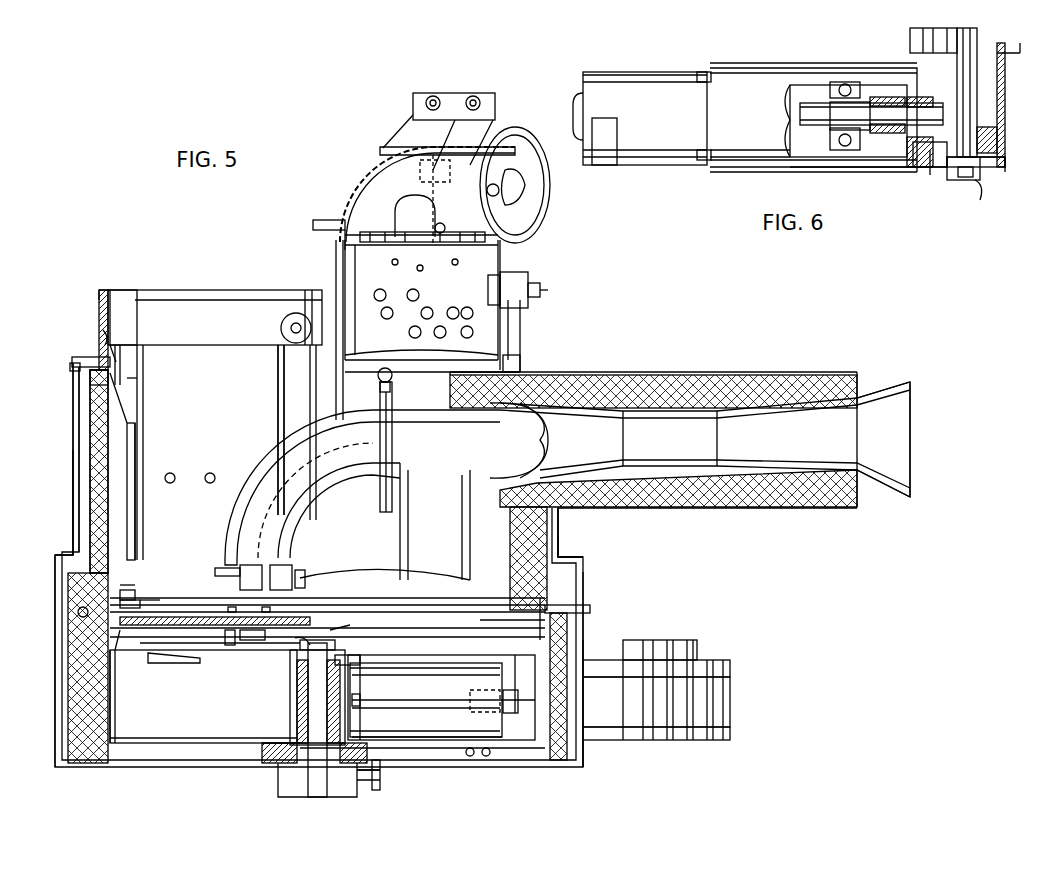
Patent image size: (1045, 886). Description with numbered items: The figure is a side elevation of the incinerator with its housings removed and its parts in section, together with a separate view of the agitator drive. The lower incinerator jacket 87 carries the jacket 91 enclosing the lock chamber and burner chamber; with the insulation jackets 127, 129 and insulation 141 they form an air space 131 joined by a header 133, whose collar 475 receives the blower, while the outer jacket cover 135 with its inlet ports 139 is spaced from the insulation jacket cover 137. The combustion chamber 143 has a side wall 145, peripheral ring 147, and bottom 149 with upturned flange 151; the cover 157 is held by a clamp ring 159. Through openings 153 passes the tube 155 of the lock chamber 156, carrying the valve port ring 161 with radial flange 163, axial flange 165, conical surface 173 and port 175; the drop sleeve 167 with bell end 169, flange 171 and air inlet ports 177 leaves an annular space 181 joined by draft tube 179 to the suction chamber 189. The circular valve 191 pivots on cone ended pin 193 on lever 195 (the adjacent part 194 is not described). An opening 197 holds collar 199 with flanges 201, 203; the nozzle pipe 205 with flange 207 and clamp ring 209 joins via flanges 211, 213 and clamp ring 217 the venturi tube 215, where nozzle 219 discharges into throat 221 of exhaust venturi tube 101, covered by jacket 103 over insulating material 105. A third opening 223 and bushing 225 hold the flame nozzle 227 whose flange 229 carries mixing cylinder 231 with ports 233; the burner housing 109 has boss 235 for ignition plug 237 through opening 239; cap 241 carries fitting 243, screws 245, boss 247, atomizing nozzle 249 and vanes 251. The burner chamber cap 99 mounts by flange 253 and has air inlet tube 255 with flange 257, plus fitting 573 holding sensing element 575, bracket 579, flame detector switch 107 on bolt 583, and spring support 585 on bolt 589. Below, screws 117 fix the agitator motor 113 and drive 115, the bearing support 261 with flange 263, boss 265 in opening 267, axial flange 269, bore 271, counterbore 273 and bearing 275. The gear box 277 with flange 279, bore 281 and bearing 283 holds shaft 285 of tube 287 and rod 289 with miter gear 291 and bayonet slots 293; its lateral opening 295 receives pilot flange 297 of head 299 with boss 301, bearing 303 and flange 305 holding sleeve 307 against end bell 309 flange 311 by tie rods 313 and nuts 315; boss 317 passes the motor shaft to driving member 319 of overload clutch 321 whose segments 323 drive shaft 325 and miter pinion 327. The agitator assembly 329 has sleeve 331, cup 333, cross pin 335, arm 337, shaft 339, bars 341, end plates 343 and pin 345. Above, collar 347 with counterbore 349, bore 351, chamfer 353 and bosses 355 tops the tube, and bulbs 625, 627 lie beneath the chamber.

In FIG. 5, the lower incinerator jacket 87 is at (55, 691).
In FIG. 5, the jacket 91 is at (73, 411).
In FIG. 5, the burner chamber cap 99 is at (356, 172).
In FIG. 5, the exhaust venturi tube 101 is at (882, 378).
In FIG. 5, the jacket 103 is at (750, 372).
In FIG. 5, the insulating material 105 is at (678, 375).
In FIG. 5, the flame detector switch 107 is at (495, 98).
In FIG. 5, the burner housing 109 is at (515, 331).
In FIG. 6, the agitator motor 113 is at (635, 161).
In FIG. 6, the drive 115 is at (932, 171).
In FIG. 5, the screws 117 is at (378, 773).
In FIG. 5, the insulation jacket 127 is at (580, 628).
In FIG. 5, the insulation jacket 129 is at (548, 523).
In FIG. 5, the air space 131 is at (73, 504).
In FIG. 5, the header 133 is at (722, 713).
In FIG. 5, the outer jacket cover 135 is at (68, 367).
In FIG. 5, the insulation jacket cover 137 is at (90, 386).
In FIG. 5, the inlet ports 139 is at (528, 360).
In FIG. 5, the insulation 141 is at (95, 463).
In FIG. 5, the combustion chamber 143 is at (462, 655).
In FIG. 5, the side wall 145 is at (115, 691).
In FIG. 5, the peripheral ring 147 is at (588, 586).
In FIG. 5, the bottom 149 is at (140, 739).
In FIG. 5, the upturned flange 151 is at (112, 721).
In FIG. 5, the openings 153 is at (125, 359).
In FIG. 5, the cylindrical tube 155 is at (90, 446).
In FIG. 5, the lock or intermediate chamber 156 is at (137, 327).
In FIG. 5, the combustion chamber cover 157 is at (475, 626).
In FIG. 5, the clamp ring 159 is at (83, 613).
In FIG. 5, the valve port ring 161 is at (137, 593).
In FIG. 5, the radial flange 163 is at (140, 604).
In FIG. 5, the axial flange 165 is at (115, 631).
In FIG. 5, the drop sleeve 167 is at (137, 448).
In FIG. 5, the bell shaped upper end 169 is at (130, 391).
In FIG. 5, the radially outwardly directed flange 171 is at (122, 381).
In FIG. 5, the conical surface 173 is at (135, 586).
In FIG. 5, the cylindrical port 175 is at (150, 641).
In FIG. 5, the air inlet ports 177 is at (172, 473).
In FIG. 5, the draft tube 179 is at (336, 521).
In FIG. 5, the annular space 181 is at (135, 504).
In FIG. 5, the suction chamber 189 is at (522, 418).
In FIG. 5, the circular valve 191 is at (310, 623).
In FIG. 5, the cone ended pin 193 is at (228, 639).
In FIG. 5, the fitting 194 is at (265, 601).
In FIG. 5, the lever 195 is at (240, 635).
In FIG. 5, the opening 197 is at (235, 601).
In FIG. 5, the collar 199 is at (215, 579).
In FIG. 5, the flange 201 is at (310, 601).
In FIG. 5, the flange 203 is at (305, 581).
In FIG. 5, the nozzle pipe 205 is at (241, 516).
In FIG. 5, the flange 207 is at (305, 573).
In FIG. 5, the clamp ring 209 is at (220, 571).
In FIG. 5, the flange 211 is at (372, 491).
In FIG. 5, the flange 213 is at (393, 471).
In FIG. 5, the venturi tube 215 is at (395, 389).
In FIG. 5, the clamp ring 217 is at (392, 376).
In FIG. 5, the nozzle 219 is at (540, 441).
In FIG. 5, the throat 221 is at (677, 438).
In FIG. 5, the third opening 223 is at (370, 646).
In FIG. 5, the bushing 225 is at (340, 586).
In FIG. 5, the flame nozzle 227 is at (376, 561).
In FIG. 5, the axial flange 229 is at (345, 444).
In FIG. 5, the mixing cylinder 231 is at (345, 300).
In FIG. 5, the air inlet ports 233 is at (412, 331).
In FIG. 5, the boss 235 is at (490, 310).
In FIG. 5, the ignition plug 237 is at (530, 285).
In FIG. 5, the lateral opening 239 is at (489, 288).
In FIG. 5, the cap 241 is at (392, 264).
In FIG. 5, the fuel inlet fitting 243 is at (408, 202).
In FIG. 5, the screws 245 is at (447, 228).
In FIG. 5, the boss 247 is at (458, 263).
In FIG. 5, the atomizing nozzle 249 is at (420, 271).
In FIG. 5, the vanes 251 is at (405, 238).
In FIG. 5, the radial flange 253 is at (326, 220).
In FIG. 5, the air inlet tube 255 is at (548, 184).
In FIG. 5, the flange 257 is at (545, 213).
In FIG. 5, the bearing support 261 is at (300, 706).
In FIG. 5, the radial flange 263 is at (262, 756).
In FIG. 5, the boss 265 is at (295, 740).
In FIG. 5, the opening 267 is at (260, 746).
In FIG. 5, the axial flange 269 is at (380, 774).
In FIG. 5, the bore 271 is at (352, 676).
In FIG. 5, the counterbore 273 is at (380, 736).
In FIG. 5, the bearing 275 is at (355, 709).
In FIG. 6, the gear box 277 is at (998, 171).
In FIG. 5, the flange 279 is at (278, 776).
In FIG. 6, the flange 279 is at (915, 35).
In FIG. 6, the bore 281 is at (965, 181).
In FIG. 6, the self lubricating bearing 283 is at (975, 186).
In FIG. 5, the shaft 285 is at (297, 681).
In FIG. 6, the shaft 285 is at (978, 31).
In FIG. 5, the hollow tube 287 is at (318, 691).
In FIG. 6, the hollow tube 287 is at (975, 86).
In FIG. 6, the solid rod 289 is at (985, 176).
In FIG. 6, the miter gear 291 is at (1002, 121).
In FIG. 5, the bayonet slots 293 is at (305, 644).
In FIG. 6, the lateral opening 295 is at (958, 179).
In FIG. 6, the pilot flange 297 is at (907, 156).
In FIG. 6, the head 299 is at (885, 171).
In FIG. 6, the axial boss 301 is at (905, 136).
In FIG. 6, the bearing 303 is at (871, 114).
In FIG. 6, the radial flange 305 is at (925, 171).
In FIG. 6, the cylindrical sleeve 307 is at (735, 168).
In FIG. 6, the end bell 309 is at (714, 109).
In FIG. 6, the radial flange 311 is at (712, 123).
In FIG. 6, the tie rods 313 is at (732, 156).
In FIG. 6, the nuts 315 is at (700, 82).
In FIG. 6, the axial boss 317 is at (795, 105).
In FIG. 6, the driving member 319 is at (825, 125).
In FIG. 6, the overload clutch 321 is at (828, 151).
In FIG. 6, the friction driving segments 323 is at (847, 148).
In FIG. 6, the driven shaft 325 is at (850, 116).
In FIG. 6, the miter pinion 327 is at (990, 120).
In FIG. 5, the agitator assembly 329 is at (455, 655).
In FIG. 5, the sleeve 331 is at (362, 661).
In FIG. 5, the cup portion 333 is at (330, 651).
In FIG. 5, the cross pin 335 is at (300, 656).
In FIG. 5, the arm 337 is at (160, 664).
In FIG. 5, the shaft 339 is at (450, 695).
In FIG. 5, the rods or bars 341 is at (412, 668).
In FIG. 5, the end plates 343 is at (355, 700).
In FIG. 5, the pin 345 is at (506, 656).
In FIG. 5, the collar 347 is at (99, 314).
In FIG. 5, the counterbore 349 is at (101, 343).
In FIG. 5, the bore 351 is at (108, 289).
In FIG. 5, the chamfer 353 is at (102, 294).
In FIG. 5, the lateral bosses 355 is at (140, 323).
In FIG. 5, the collar 475 is at (682, 645).
In FIG. 5, the fitting 573 is at (420, 176).
In FIG. 5, the flame responsive sensing element 575 is at (413, 343).
In FIG. 5, the bracket 579 is at (490, 116).
In FIG. 5, the bolt 583 is at (478, 97).
In FIG. 5, the spring support 585 is at (403, 125).
In FIG. 5, the bolt 589 is at (435, 97).
In FIG. 5, the bulb 625 is at (470, 757).
In FIG. 5, the bulb 627 is at (488, 757).